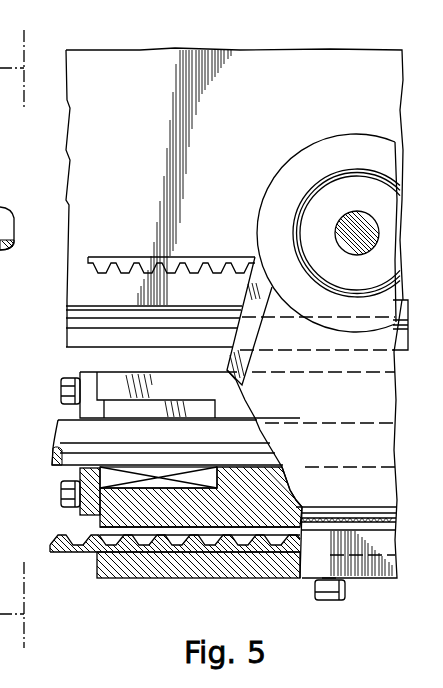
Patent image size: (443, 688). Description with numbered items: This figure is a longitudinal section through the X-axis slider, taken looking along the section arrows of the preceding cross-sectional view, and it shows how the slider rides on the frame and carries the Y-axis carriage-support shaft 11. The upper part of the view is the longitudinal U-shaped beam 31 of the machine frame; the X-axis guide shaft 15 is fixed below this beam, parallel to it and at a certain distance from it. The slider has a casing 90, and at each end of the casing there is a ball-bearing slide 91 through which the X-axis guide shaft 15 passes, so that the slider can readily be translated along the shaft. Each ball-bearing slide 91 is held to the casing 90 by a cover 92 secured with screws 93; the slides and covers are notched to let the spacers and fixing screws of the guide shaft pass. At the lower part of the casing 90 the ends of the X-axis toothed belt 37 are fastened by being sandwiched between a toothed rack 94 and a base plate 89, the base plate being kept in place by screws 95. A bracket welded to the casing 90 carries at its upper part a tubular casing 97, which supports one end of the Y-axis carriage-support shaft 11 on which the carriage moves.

The longitudinal beam 31 is at (323, 63).
The tubular casing 97 is at (288, 181).
The Y-axis carriage-support shaft 11 is at (355, 225).
The X-axis toothed belt 37 is at (119, 257).
The cover 92 is at (88, 375).
The screw 93 is at (66, 391).
The X-axis guide shaft 15 is at (62, 429).
The ball-bearing slide 91 is at (207, 480).
The casing 90 is at (237, 405).
The toothed rack 94 is at (98, 530).
The base plate 89 is at (140, 566).
The screw 95 is at (347, 598).